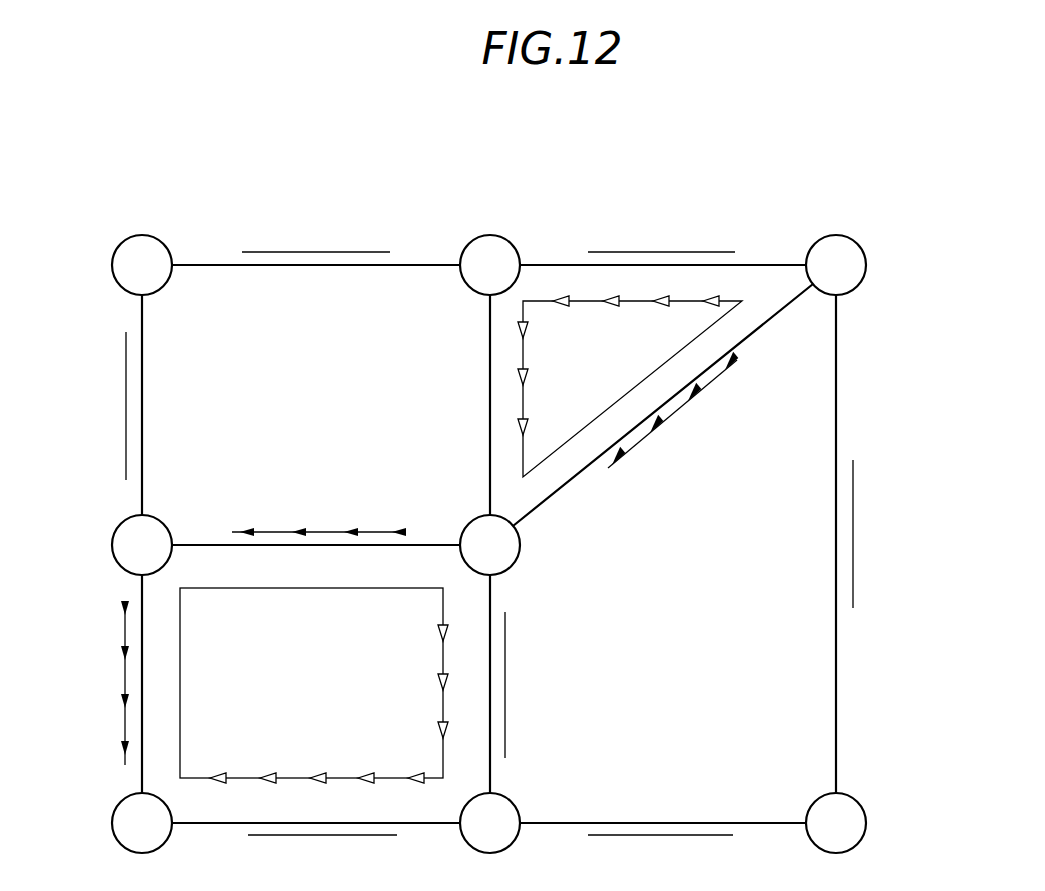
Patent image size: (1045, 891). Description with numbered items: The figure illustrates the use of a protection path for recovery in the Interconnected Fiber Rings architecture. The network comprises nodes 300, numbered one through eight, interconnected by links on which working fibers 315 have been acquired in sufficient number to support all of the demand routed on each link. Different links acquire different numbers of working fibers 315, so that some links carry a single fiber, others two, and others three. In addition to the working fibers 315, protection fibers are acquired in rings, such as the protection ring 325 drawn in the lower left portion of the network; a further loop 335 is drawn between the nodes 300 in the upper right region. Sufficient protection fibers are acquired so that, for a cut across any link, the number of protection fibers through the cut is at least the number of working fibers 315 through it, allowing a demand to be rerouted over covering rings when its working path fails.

The nodes 300 is at (507, 238).
The working fibers 315 is at (489, 545).
The protection ring 325 is at (188, 703).
The traffic loop 335 is at (632, 390).